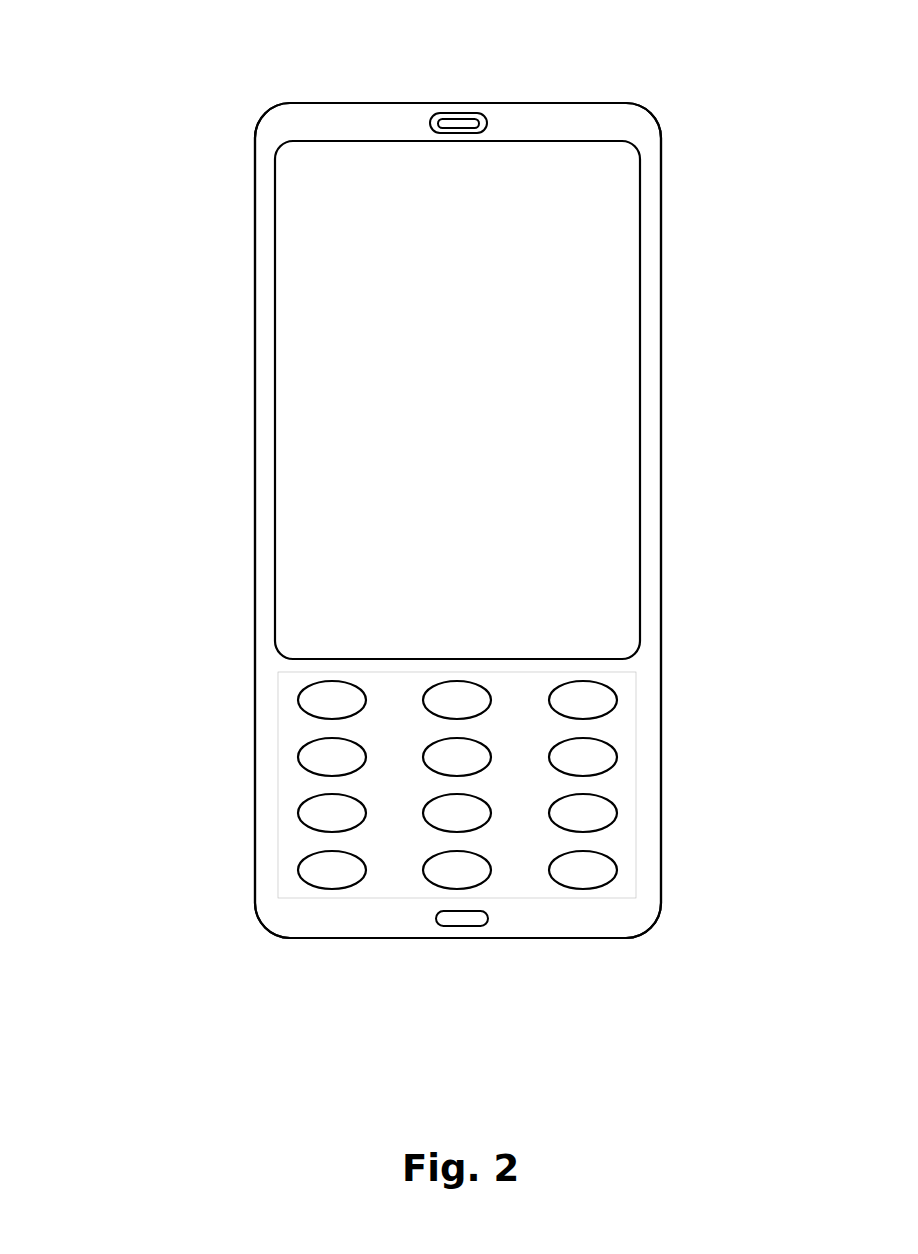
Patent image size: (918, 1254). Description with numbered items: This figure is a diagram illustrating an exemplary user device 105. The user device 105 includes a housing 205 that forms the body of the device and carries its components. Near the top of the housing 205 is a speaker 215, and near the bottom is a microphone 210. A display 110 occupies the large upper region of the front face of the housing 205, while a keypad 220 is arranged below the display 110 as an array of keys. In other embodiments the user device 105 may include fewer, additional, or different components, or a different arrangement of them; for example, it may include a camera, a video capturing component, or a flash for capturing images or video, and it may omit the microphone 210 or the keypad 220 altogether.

The user device 105 is at (203, 89).
The housing 205 is at (255, 458).
The display 110 is at (625, 392).
The speaker 215 is at (472, 113).
The microphone 210 is at (477, 926).
The keypad 220 is at (672, 887).